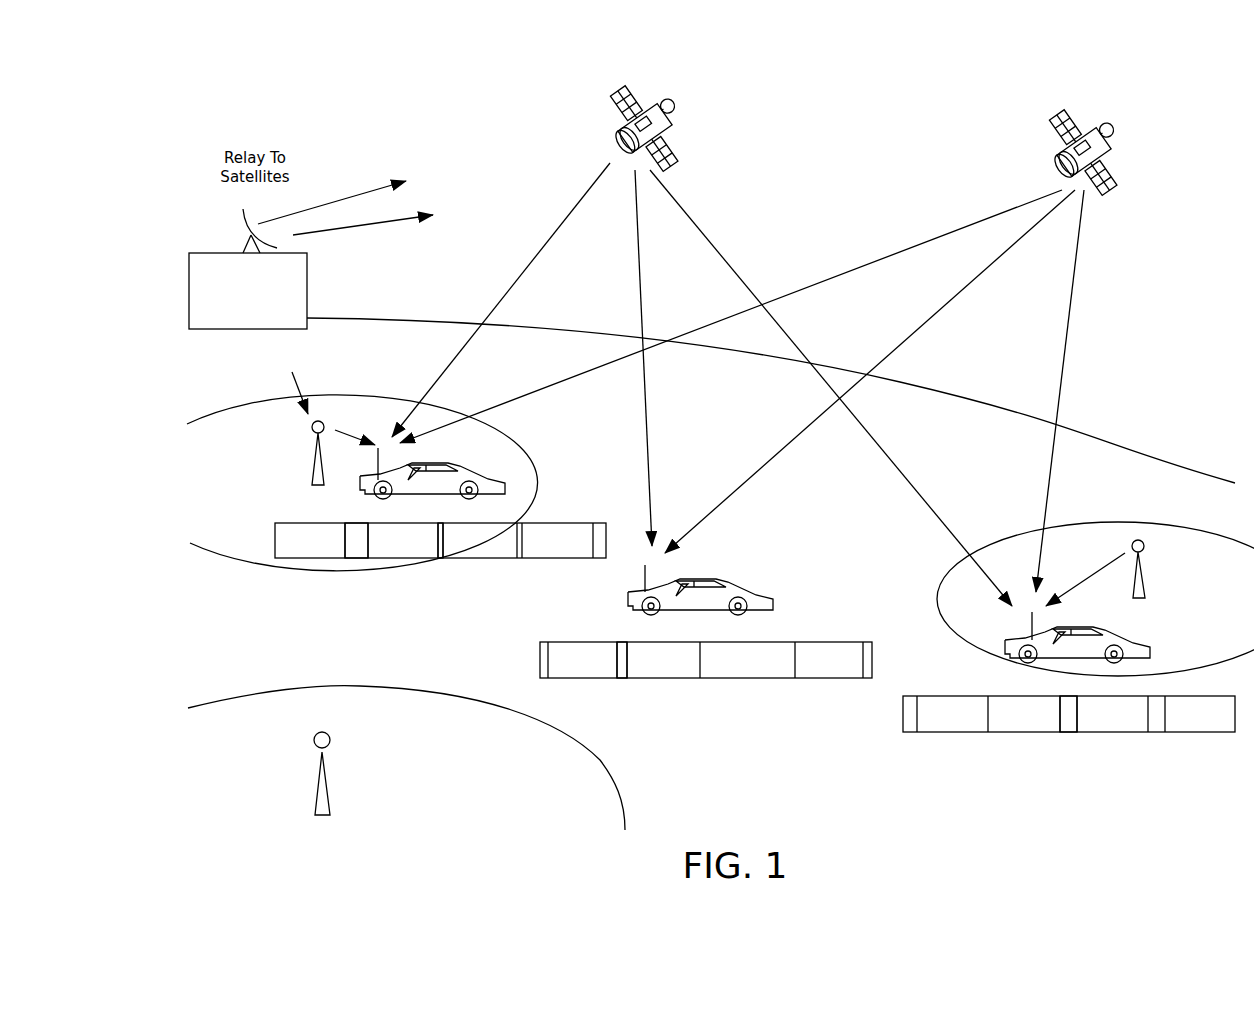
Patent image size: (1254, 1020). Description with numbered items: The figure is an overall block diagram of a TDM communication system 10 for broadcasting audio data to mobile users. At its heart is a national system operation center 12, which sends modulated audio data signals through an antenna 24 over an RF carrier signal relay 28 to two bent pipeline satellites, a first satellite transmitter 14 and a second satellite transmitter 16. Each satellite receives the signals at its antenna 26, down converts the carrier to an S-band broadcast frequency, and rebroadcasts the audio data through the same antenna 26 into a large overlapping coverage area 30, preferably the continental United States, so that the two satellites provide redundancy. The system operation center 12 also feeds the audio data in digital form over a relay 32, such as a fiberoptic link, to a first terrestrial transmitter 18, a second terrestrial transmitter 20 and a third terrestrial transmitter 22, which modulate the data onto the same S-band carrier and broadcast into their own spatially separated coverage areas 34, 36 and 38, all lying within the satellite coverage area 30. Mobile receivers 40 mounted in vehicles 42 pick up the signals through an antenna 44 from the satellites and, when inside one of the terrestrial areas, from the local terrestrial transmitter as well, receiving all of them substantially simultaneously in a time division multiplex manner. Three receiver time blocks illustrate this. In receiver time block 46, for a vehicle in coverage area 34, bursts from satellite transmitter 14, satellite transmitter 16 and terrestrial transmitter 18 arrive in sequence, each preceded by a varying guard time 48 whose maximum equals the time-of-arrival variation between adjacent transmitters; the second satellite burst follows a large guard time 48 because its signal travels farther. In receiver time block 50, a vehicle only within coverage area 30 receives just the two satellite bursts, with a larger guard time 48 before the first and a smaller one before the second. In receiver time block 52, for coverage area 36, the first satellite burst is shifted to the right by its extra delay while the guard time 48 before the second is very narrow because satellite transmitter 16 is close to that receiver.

The TDM communication system 10 is at (948, 112).
The system operation center 12 is at (307, 283).
The first bent pipeline satellite transmitter 14 is at (658, 116).
The second bent pipeline satellite transmitter 16 is at (1090, 142).
The first terrestrial transmitter 18 is at (318, 476).
The second terrestrial transmitter 20 is at (1140, 588).
The third terrestrial transmitter 22 is at (326, 797).
The antenna 24 is at (245, 214).
The antenna 26 is at (638, 152).
The RF carrier signal relay 28 is at (341, 200).
The overlapping coverage area 30 is at (1128, 446).
The relay 32 is at (293, 374).
The coverage area 34 is at (527, 462).
The coverage area 36 is at (1098, 524).
The coverage area 38 is at (602, 758).
The mobile receiver 40 is at (414, 470).
The vehicle 42 is at (506, 490).
The antenna 44 is at (378, 462).
The receiver time block 46 is at (314, 560).
The guard time 48 is at (358, 558).
The receiver time block 50 is at (745, 678).
The receiver time block 52 is at (927, 696).